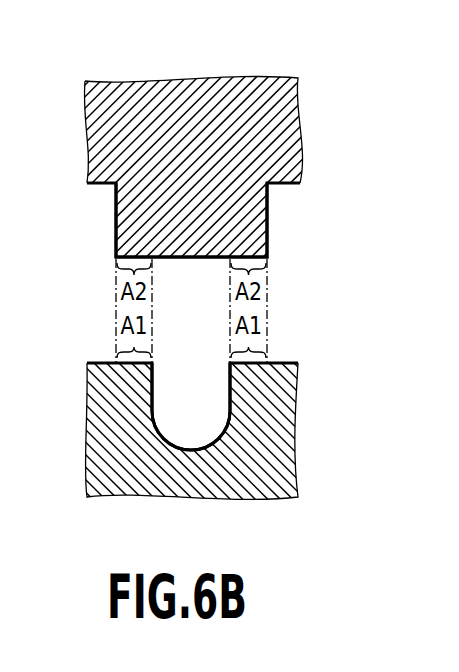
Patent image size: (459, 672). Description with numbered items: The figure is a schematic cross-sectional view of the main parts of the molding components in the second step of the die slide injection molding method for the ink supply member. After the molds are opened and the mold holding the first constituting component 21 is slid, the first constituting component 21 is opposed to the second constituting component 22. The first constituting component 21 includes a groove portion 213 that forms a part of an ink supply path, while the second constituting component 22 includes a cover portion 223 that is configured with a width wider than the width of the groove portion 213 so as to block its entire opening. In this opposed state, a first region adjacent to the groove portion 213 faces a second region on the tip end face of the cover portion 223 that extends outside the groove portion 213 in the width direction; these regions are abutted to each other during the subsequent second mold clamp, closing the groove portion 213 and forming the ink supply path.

The second constituting component 22 is at (187, 94).
The cover portion 223 is at (227, 218).
The first constituting component 21 is at (193, 483).
The groove portion 213 is at (177, 409).